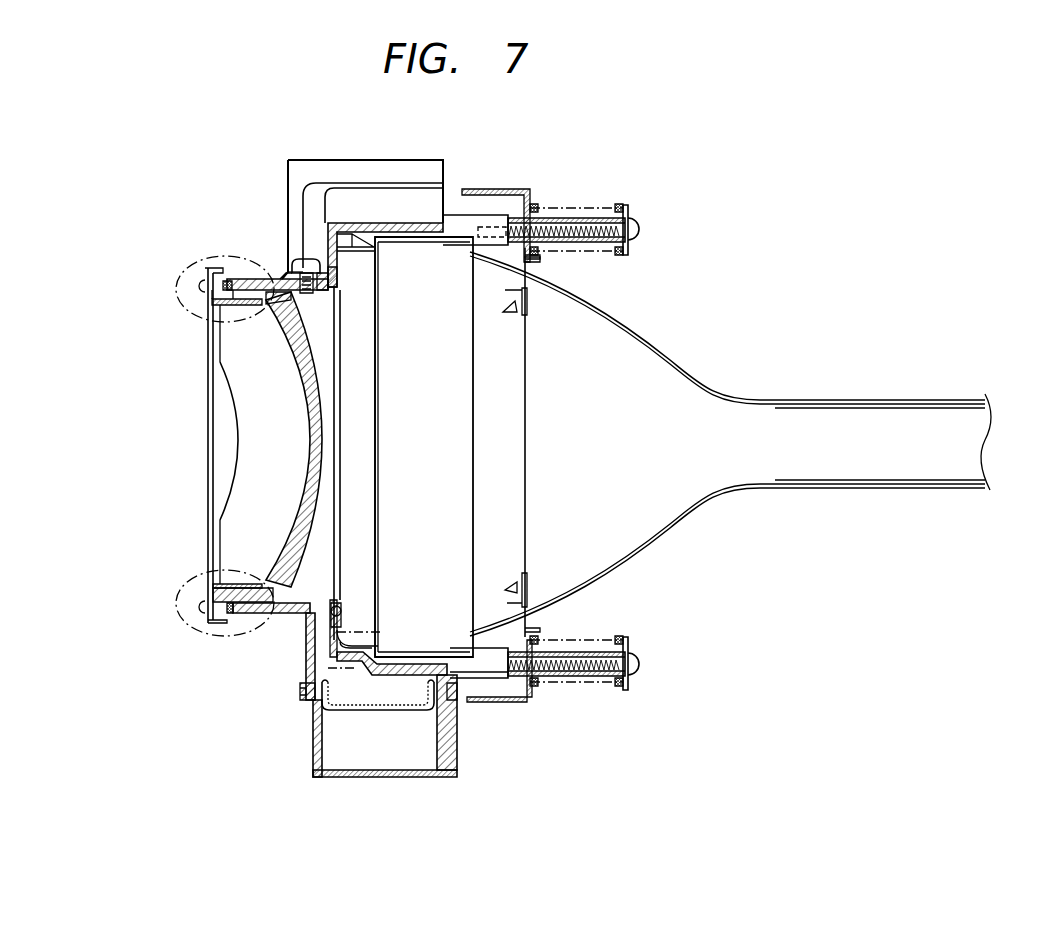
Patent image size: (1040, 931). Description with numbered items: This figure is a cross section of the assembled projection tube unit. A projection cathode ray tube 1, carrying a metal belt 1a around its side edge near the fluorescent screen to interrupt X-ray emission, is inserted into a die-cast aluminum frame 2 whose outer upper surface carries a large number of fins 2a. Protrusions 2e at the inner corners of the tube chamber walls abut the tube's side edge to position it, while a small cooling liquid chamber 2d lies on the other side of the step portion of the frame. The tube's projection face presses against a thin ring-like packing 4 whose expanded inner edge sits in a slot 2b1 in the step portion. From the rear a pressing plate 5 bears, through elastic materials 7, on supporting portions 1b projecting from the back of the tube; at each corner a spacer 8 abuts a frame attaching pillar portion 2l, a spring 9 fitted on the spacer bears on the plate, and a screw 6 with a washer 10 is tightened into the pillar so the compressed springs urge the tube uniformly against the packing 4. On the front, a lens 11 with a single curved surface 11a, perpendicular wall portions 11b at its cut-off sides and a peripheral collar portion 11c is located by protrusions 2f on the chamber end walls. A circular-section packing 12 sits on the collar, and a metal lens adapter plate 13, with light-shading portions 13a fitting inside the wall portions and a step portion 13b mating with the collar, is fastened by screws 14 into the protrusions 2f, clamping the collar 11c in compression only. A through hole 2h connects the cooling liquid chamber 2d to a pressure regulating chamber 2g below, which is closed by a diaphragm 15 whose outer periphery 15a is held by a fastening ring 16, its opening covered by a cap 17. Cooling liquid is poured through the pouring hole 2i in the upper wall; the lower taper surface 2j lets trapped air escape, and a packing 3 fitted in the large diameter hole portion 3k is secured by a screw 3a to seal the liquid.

The projection cathode ray tube 1 is at (818, 400).
The metal belt 1a is at (473, 418).
The supporting portions 1b is at (526, 318).
The frame 2 is at (301, 160).
The fins 2a is at (418, 200).
The slot 2b1 is at (378, 578).
The cooling liquid chamber 2d is at (345, 525).
The protrusions 2e is at (353, 235).
The protrusions 2f is at (327, 250).
The pressure regulating chamber 2g is at (372, 710).
The through hole 2h is at (306, 644).
The cooling liquid pouring hole 2i is at (322, 292).
The taper surface 2j is at (278, 304).
The frame attaching pillar portions 2l is at (493, 215).
The packing 3 is at (292, 281).
The screw 3a is at (294, 262).
The large diameter hole portion 3k is at (330, 290).
The packing 4 is at (343, 610).
The pressing plate 5 is at (476, 189).
The screws 6 is at (640, 232).
The elastic materials 7 is at (527, 305).
The spacer 8 is at (593, 218).
The spring 9 is at (573, 207).
The washer 10 is at (626, 205).
The lens 11 is at (312, 394).
The curved surface 11a is at (310, 455).
The perpendicular wall portion 11b is at (233, 302).
The collar portion 11c is at (220, 285).
The packing 12 is at (229, 614).
The lens adapter plate 13 is at (208, 418).
The light-shading portions 13a is at (228, 463).
The step portion 13b is at (225, 305).
The screws 14 is at (205, 285).
The diaphragm 15 is at (322, 725).
The outer periphery 15a is at (300, 700).
The fastening ring 16 is at (457, 742).
The cap 17 is at (402, 777).